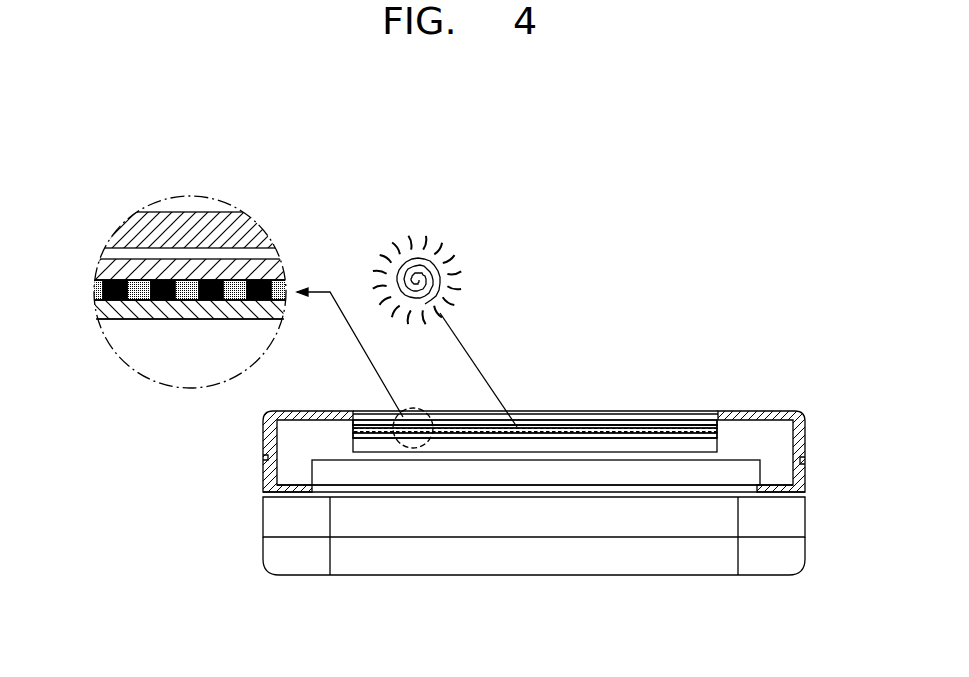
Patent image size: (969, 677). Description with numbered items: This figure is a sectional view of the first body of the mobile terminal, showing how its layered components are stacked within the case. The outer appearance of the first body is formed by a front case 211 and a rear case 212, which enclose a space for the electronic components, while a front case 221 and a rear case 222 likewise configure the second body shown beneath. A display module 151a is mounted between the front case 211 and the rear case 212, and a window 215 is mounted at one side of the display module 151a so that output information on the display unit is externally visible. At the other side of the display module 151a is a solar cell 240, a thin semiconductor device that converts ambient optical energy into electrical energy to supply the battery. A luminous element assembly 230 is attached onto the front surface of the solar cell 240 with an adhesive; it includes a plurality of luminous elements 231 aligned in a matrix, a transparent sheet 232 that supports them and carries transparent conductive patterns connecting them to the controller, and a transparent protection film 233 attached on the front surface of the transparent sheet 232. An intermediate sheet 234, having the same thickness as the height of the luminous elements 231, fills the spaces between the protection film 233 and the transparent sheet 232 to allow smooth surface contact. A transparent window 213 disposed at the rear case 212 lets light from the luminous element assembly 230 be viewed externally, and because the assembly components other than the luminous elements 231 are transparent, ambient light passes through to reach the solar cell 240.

The display module 151a is at (600, 480).
The front case 211 is at (803, 482).
The rear case 212 is at (803, 436).
The transparent window 213 is at (192, 218).
The window 215 is at (537, 490).
The front case 221 is at (798, 522).
The rear case 222 is at (798, 552).
The luminous element assembly 230 is at (672, 346).
The luminous elements 231 is at (100, 287).
The transparent sheet 232 is at (177, 305).
The transparent protection film 233 is at (102, 272).
The intermediate sheet 234 is at (137, 295).
The solar cell 240 is at (200, 375).